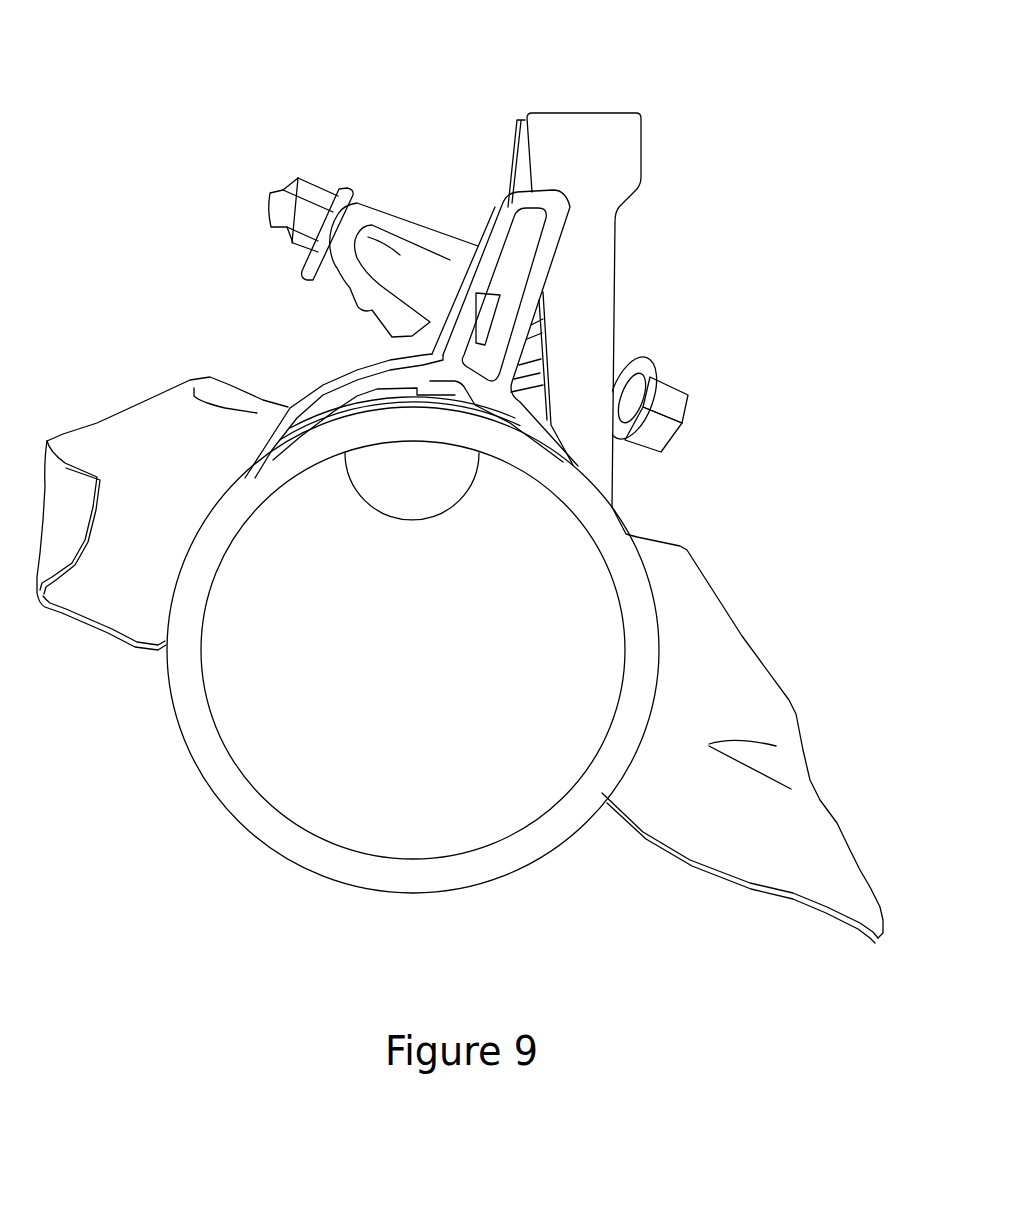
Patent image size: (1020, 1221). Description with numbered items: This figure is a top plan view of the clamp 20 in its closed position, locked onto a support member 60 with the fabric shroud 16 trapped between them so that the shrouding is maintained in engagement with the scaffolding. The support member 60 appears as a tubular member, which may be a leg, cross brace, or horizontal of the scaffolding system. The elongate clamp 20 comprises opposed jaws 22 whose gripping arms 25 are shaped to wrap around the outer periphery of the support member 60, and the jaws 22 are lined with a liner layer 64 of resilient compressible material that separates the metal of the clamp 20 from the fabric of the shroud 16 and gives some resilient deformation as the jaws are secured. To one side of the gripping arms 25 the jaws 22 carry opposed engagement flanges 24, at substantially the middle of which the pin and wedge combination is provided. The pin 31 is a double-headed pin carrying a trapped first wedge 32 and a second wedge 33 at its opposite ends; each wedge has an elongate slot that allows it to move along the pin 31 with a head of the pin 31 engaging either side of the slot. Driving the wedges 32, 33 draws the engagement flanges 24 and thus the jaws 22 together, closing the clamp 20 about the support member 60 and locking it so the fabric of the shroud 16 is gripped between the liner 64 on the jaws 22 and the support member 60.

The shroud 16 is at (105, 602).
The clamp 20 is at (447, 68).
The jaws 22 is at (268, 445).
The engagement flanges 24 is at (510, 205).
The gripping arms 25 is at (347, 372).
The pin 31 is at (615, 393).
The first wedge 32 is at (397, 218).
The second wedge 33 is at (593, 137).
The support member 60 is at (210, 763).
The liner layer 64 is at (313, 420).